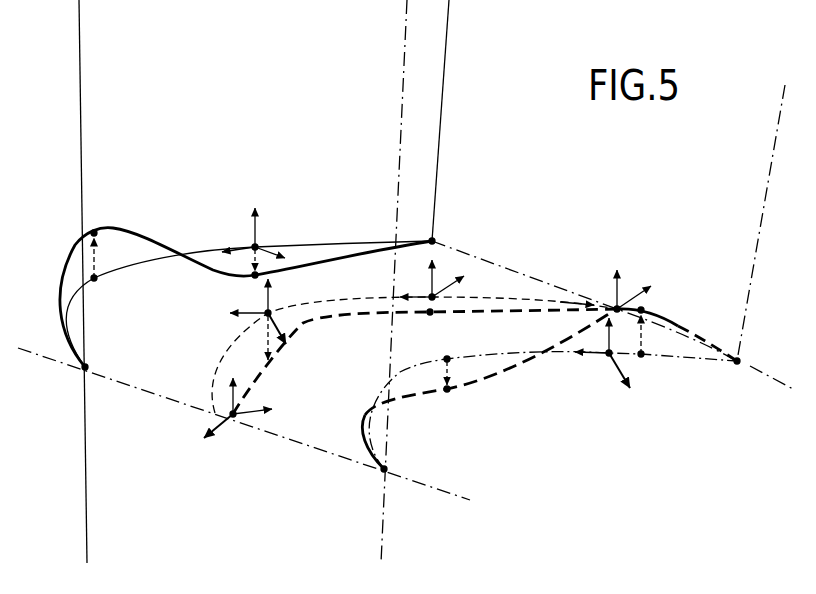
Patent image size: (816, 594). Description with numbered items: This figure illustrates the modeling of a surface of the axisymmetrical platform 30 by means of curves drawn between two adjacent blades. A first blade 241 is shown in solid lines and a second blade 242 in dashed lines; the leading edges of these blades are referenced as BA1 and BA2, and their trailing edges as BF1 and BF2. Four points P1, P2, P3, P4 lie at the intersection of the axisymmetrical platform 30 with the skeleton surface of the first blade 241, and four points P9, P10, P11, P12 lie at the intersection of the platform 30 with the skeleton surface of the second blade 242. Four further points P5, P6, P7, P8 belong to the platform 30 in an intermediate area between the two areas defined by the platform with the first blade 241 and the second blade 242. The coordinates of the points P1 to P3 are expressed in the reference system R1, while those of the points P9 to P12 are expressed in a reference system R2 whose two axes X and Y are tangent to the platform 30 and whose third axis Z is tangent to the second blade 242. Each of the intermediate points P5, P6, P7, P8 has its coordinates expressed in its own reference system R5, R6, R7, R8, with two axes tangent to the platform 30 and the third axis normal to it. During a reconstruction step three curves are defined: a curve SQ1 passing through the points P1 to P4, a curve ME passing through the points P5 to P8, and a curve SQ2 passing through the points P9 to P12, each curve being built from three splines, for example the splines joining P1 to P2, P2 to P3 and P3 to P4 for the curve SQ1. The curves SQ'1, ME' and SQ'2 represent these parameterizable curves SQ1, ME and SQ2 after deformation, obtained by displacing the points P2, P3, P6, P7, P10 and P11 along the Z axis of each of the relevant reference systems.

The first blade 241 is at (247, 46).
The second blade 242 is at (601, 181).
The axisymmetrical platform 30 is at (512, 456).
The leading edge of the first blade BA1 is at (79, 70).
The leading edge of the second blade BA2 is at (402, 97).
The trailing edge of the first blade BF1 is at (447, 55).
The trailing edge of the second blade BF2 is at (766, 200).
The first curve SQ1 is at (145, 265).
The deformed first curve SQ'1 is at (246, 274).
The second curve SQ2 is at (694, 360).
The deformed second curve SQ'2 is at (549, 389).
The intermediate curve ME is at (391, 355).
The deformed intermediate curve ME' is at (425, 361).
The first intersection point P1 is at (97, 360).
The second intersection point P2 is at (99, 267).
The third intersection point P3 is at (254, 242).
The fourth intersection point P4 is at (446, 232).
The first intermediate point P5 is at (238, 408).
The second intermediate point P6 is at (258, 319).
The third intermediate point P7 is at (438, 287).
The fourth intermediate point P8 is at (623, 291).
The fifth intersection point P9 is at (373, 477).
The sixth intersection point P10 is at (453, 363).
The seventh intersection point P11 is at (645, 347).
The eighth intersection point P12 is at (756, 354).
The first reference system R1 is at (240, 222).
The second reference system R2 is at (602, 362).
The reference system of point P5 R5 is at (212, 417).
The reference system of point P6 R6 is at (240, 304).
The reference system of point P7 R7 is at (448, 283).
The reference system of point P8 R8 is at (631, 283).